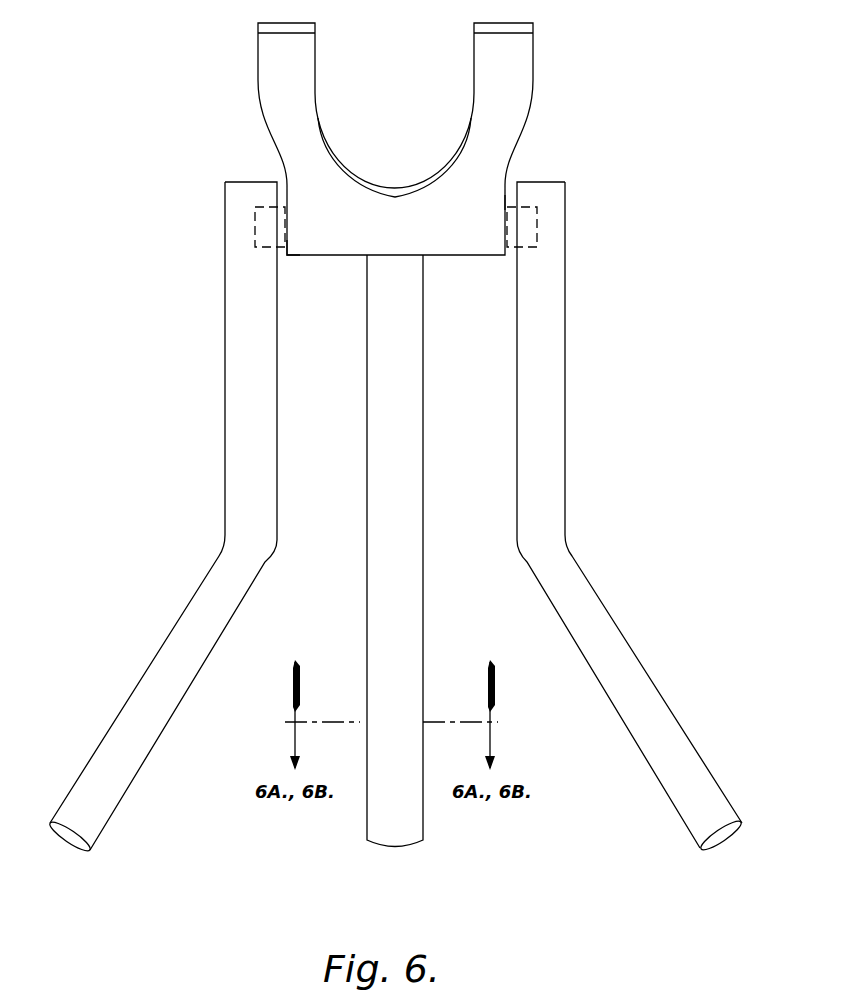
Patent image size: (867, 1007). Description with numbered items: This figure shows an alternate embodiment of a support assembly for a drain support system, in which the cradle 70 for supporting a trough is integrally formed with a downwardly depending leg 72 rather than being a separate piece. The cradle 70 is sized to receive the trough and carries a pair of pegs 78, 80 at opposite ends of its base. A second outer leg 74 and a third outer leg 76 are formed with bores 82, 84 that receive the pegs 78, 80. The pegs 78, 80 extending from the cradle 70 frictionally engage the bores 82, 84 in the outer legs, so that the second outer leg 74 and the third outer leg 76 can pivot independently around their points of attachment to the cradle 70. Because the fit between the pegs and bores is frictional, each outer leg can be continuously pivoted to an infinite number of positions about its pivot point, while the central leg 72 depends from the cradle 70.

The cradle 70 is at (533, 70).
The downwardly depending leg 72 is at (423, 583).
The second outer leg 74 is at (218, 553).
The third outer leg 76 is at (574, 550).
The peg 78 is at (287, 245).
The peg 80 is at (510, 210).
The bore 82 is at (255, 222).
The bore 84 is at (537, 222).